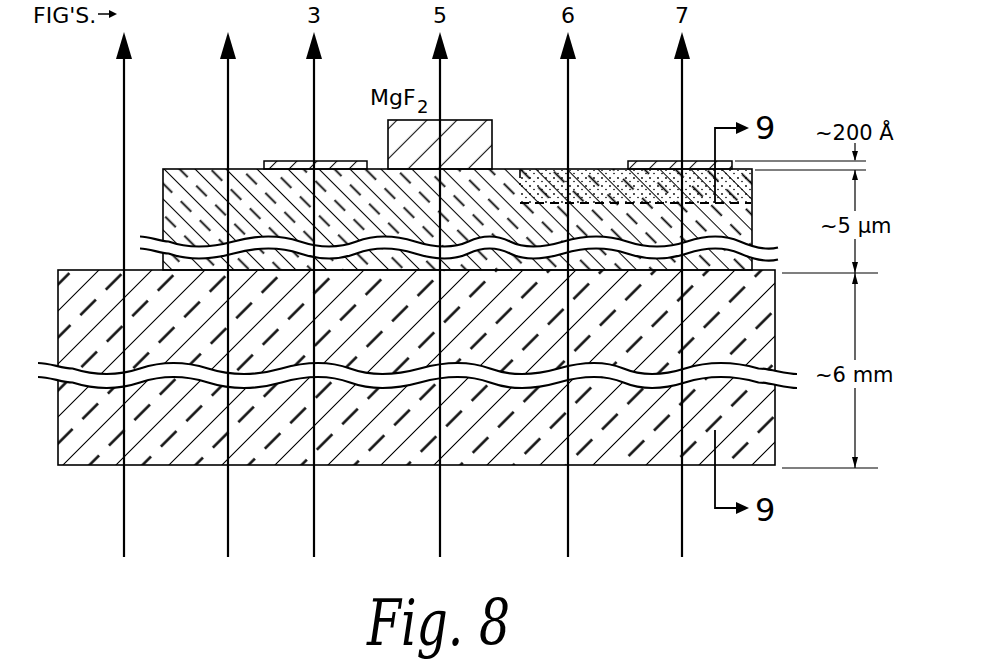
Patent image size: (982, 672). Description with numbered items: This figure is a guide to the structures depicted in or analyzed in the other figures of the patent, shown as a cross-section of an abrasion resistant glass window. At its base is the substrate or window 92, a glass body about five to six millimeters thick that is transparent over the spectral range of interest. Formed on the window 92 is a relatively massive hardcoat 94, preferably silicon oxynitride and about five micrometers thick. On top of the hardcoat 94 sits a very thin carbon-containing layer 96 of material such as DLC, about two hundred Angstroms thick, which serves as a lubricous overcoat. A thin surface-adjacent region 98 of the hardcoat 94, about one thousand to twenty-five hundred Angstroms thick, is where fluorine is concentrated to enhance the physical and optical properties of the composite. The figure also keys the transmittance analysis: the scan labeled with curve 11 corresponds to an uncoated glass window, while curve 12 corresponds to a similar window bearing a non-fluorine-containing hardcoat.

The transmittance curve for uncoated glass window 11 is at (124, 96).
The transmittance curve for hardcoated window 12 is at (228, 96).
The substrate or window 92 is at (366, 338).
The hardcoat 94 is at (382, 218).
The carbon-containing layer 96 is at (295, 161).
The surface-adjacent region of the hardcoat 98 is at (698, 177).